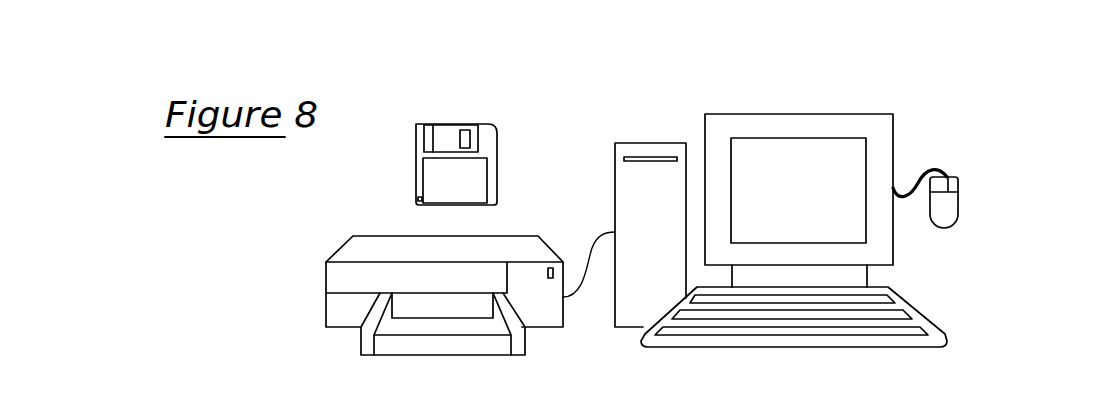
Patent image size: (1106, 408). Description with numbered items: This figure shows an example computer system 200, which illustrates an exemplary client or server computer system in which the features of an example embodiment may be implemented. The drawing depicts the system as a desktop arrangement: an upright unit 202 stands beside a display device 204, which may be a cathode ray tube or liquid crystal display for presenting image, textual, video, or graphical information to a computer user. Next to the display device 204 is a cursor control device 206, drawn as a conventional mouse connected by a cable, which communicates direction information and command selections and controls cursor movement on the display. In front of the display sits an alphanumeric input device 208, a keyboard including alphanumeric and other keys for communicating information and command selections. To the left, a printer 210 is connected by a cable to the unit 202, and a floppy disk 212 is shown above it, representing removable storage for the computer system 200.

The computer system 200 is at (900, 97).
The computer tower / processing unit 202 is at (619, 213).
The display device 204 is at (852, 200).
The cursor control device 206 is at (990, 208).
The alphanumeric input device 208 is at (844, 317).
The printer 210 is at (418, 291).
The floppy disk / storage medium 212 is at (414, 164).